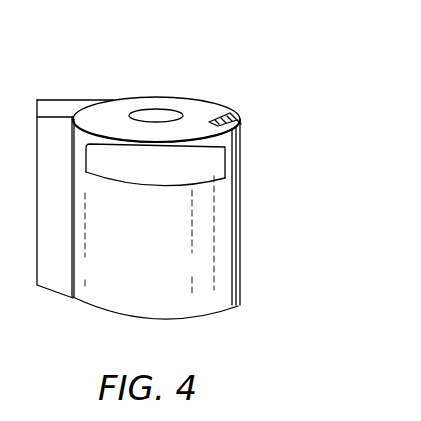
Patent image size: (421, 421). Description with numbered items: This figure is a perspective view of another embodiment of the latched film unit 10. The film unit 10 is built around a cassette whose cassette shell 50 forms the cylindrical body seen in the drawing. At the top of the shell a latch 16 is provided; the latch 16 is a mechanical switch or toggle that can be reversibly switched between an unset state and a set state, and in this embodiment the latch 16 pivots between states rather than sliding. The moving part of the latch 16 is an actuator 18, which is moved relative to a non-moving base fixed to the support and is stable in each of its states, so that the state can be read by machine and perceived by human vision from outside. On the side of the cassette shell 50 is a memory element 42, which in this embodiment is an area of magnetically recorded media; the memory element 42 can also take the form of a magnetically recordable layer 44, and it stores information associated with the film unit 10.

The latched film unit 10 is at (120, 77).
The latch 16 is at (230, 89).
The actuator 18 is at (218, 116).
The memory element 42 is at (206, 181).
The magnetically recordable layer 44 is at (195, 176).
The cassette shell 50 is at (236, 305).